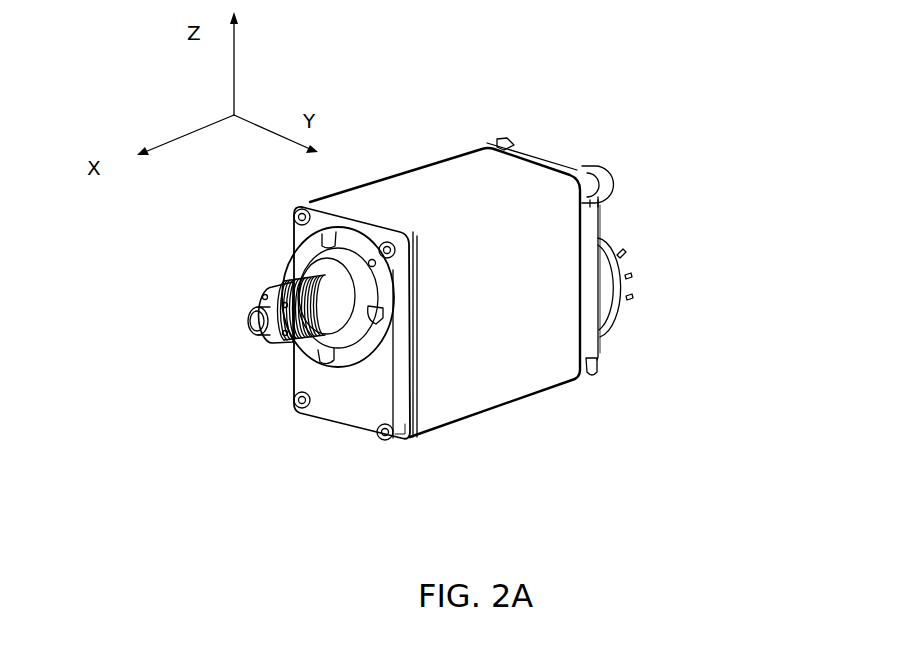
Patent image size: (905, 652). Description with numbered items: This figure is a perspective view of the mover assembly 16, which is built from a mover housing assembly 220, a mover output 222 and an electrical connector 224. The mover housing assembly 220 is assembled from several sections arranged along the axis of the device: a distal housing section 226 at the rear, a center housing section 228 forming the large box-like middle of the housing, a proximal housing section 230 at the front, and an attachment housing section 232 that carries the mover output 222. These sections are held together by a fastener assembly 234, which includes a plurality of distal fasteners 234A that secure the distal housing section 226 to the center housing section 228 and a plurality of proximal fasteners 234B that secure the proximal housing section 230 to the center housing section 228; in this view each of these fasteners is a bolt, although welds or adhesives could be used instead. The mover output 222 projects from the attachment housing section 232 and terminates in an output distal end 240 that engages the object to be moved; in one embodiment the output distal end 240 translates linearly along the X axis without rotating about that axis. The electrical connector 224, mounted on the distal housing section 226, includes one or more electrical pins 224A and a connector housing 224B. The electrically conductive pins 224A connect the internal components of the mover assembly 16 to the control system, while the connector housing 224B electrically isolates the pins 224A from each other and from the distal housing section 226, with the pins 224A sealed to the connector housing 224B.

The mover assembly 16 is at (578, 107).
The mover housing assembly 220 is at (465, 178).
The mover output 222 is at (268, 333).
The electrical connector 224 is at (628, 323).
The electrical pins 224A is at (624, 252).
The connector housing 224B is at (632, 292).
The distal housing section 226 is at (568, 160).
The center housing section 228 is at (418, 187).
The proximal housing section 230 is at (341, 211).
The attachment housing section 232 is at (305, 265).
The fastener assembly 234 is at (511, 131).
The distal fasteners 234A is at (592, 372).
The proximal fasteners 234B is at (296, 215).
The output distal end 240 is at (253, 320).